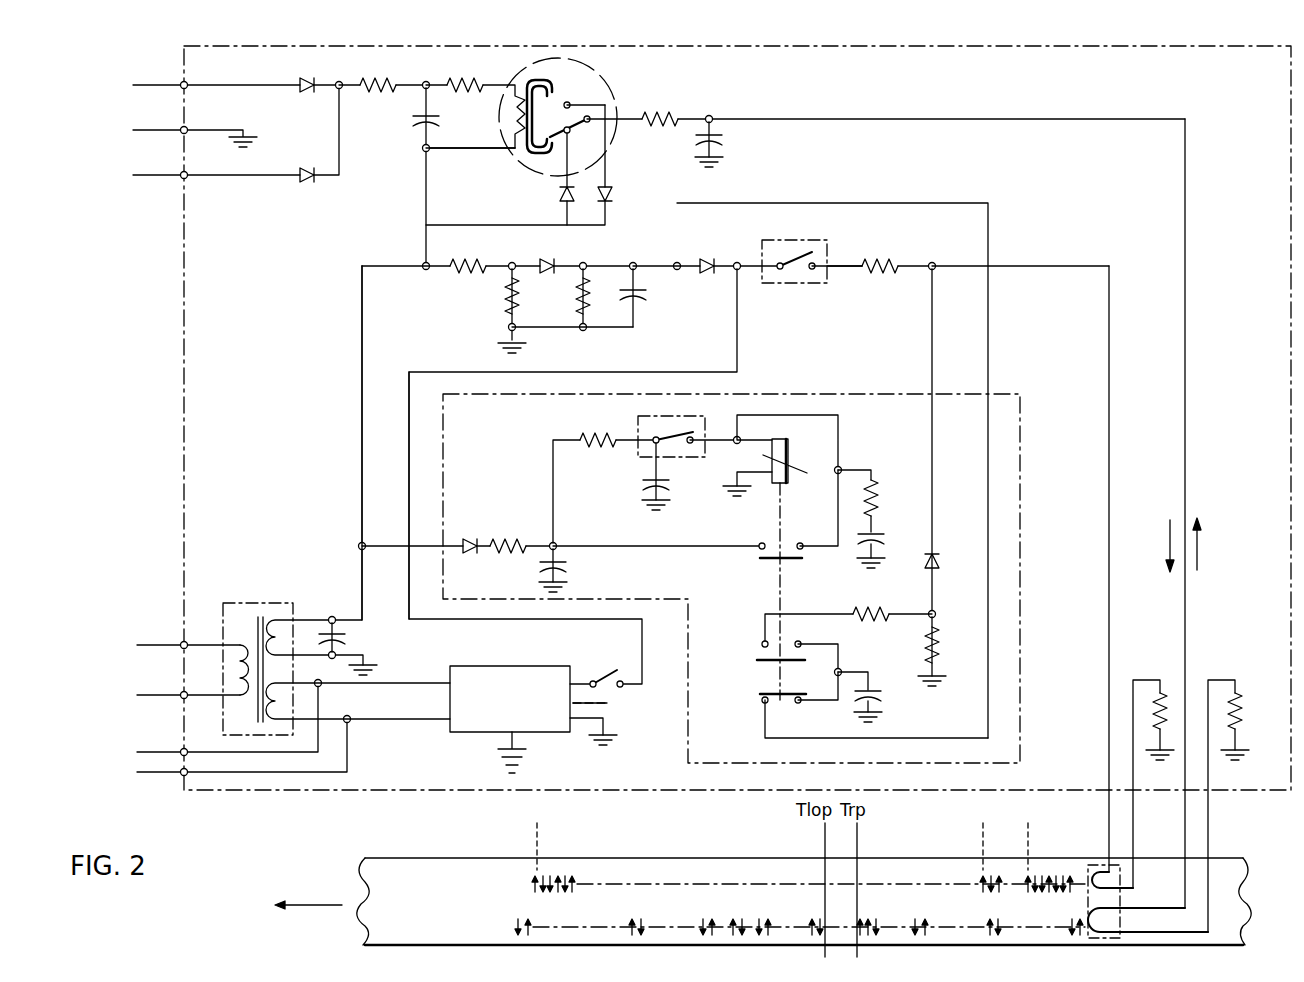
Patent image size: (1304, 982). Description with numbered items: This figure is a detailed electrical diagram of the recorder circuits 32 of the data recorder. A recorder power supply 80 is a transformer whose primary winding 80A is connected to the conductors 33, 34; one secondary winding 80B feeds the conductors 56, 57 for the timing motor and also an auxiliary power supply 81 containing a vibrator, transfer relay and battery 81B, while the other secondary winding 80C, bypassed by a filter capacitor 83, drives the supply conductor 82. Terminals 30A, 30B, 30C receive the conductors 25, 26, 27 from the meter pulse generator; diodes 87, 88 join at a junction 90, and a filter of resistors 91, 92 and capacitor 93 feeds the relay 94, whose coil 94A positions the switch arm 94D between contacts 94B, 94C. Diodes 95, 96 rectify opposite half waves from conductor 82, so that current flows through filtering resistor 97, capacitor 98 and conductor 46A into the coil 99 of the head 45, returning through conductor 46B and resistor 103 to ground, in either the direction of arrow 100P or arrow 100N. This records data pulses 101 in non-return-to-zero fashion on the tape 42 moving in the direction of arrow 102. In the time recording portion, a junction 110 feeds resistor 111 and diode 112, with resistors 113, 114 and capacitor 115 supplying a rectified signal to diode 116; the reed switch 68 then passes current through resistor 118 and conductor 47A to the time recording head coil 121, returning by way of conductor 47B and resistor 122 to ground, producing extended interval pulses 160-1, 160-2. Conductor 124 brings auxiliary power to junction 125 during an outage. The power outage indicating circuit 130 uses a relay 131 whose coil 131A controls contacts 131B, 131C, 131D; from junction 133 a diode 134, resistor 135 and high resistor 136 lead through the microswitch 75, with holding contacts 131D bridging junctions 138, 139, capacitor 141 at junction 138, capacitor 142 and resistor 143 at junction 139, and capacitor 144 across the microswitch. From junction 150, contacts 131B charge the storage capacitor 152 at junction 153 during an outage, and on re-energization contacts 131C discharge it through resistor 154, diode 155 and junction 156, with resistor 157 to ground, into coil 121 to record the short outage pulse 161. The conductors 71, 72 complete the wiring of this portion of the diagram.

The conductor 25 is at (167, 83).
The conductor 26 is at (167, 128).
The conductor 27 is at (167, 173).
The terminal 30A is at (187, 87).
The terminal 30B is at (186, 130).
The terminal 30C is at (187, 177).
The recorder circuits 32 is at (148, 412).
The conductor 33 is at (156, 644).
The conductor 34 is at (168, 694).
The magnetic tape 42 is at (610, 946).
The head 45 is at (1116, 942).
The conductor 46A is at (1186, 630).
The conductor 46B is at (1210, 828).
The conductor 47A is at (1108, 624).
The conductor 47B is at (1134, 832).
The conductor 56 is at (156, 752).
The conductor 57 is at (168, 778).
The reed switch 68 is at (808, 284).
The junction 71 is at (754, 262).
The conductor 72 is at (850, 260).
The microswitch 75 is at (692, 458).
The recorder power supply 80 is at (220, 630).
The primary winding 80A is at (240, 615).
The secondary winding 80B is at (276, 738).
The secondary winding 80C is at (284, 618).
The auxiliary power supply 81 is at (486, 666).
The battery 81B is at (498, 752).
The supply conductor 82 is at (426, 173).
The filter capacitor 83 is at (348, 636).
The diode 87 is at (300, 83).
The diode 88 is at (307, 184).
The junction 90 is at (341, 88).
The resistor 91 is at (366, 83).
The resistor 92 is at (450, 82).
The capacitor 93 is at (411, 120).
The relay 94 is at (500, 114).
The relay coil 94A is at (522, 158).
The contact 94B is at (570, 103).
The contact 94C is at (572, 135).
The switch arm 94D is at (590, 117).
The diode 95 is at (614, 192).
The diode 96 is at (558, 195).
The filtering resistor 97 is at (673, 116).
The capacitor 98 is at (730, 135).
The coil 99 is at (1096, 944).
The directional arrow 100P is at (1170, 520).
The directional arrow 100N is at (1198, 544).
The data pulses 101 is at (636, 934).
The directional arrow 102 is at (330, 906).
The resistor 103 is at (1232, 700).
The junction 110 is at (416, 270).
The resistor 111 is at (464, 262).
The diode 112 is at (552, 262).
The resistor 113 is at (506, 290).
The resistor 114 is at (578, 290).
The capacitor 115 is at (648, 298).
The diode 116 is at (692, 259).
The resistor 118 is at (870, 256).
The time recording head coil 121 is at (1116, 876).
The resistor 122 is at (1152, 716).
The conductor 124 is at (408, 488).
The circuit junction 125 is at (737, 284).
The power outage indicating circuit 130 is at (859, 394).
The relay 131 is at (830, 442).
The relay coil 131A is at (778, 472).
The relay contacts 131B is at (762, 698).
The relay contacts 131C is at (760, 656).
The relay contacts 131D is at (764, 538).
The junction 133 is at (358, 546).
The diode 134 is at (466, 542).
The resistor 135 is at (512, 542).
The resistor 136 is at (596, 440).
The junction 138 is at (556, 542).
The junction 139 is at (840, 468).
The capacitor 141 is at (564, 568).
The capacitor 142 is at (876, 534).
The resistor 143 is at (874, 492).
The capacitor 144 is at (648, 484).
The junction 150 is at (676, 263).
The storage capacitor 152 is at (884, 704).
The junction 153 is at (842, 670).
The resistor 154 is at (856, 606).
The diode 155 is at (938, 564).
The junction 156 is at (938, 260).
The resistor 157 is at (946, 640).
The interval pulse 160-1 is at (552, 876).
The interval pulse 160-2 is at (1056, 876).
The outage pulse 161 is at (984, 860).